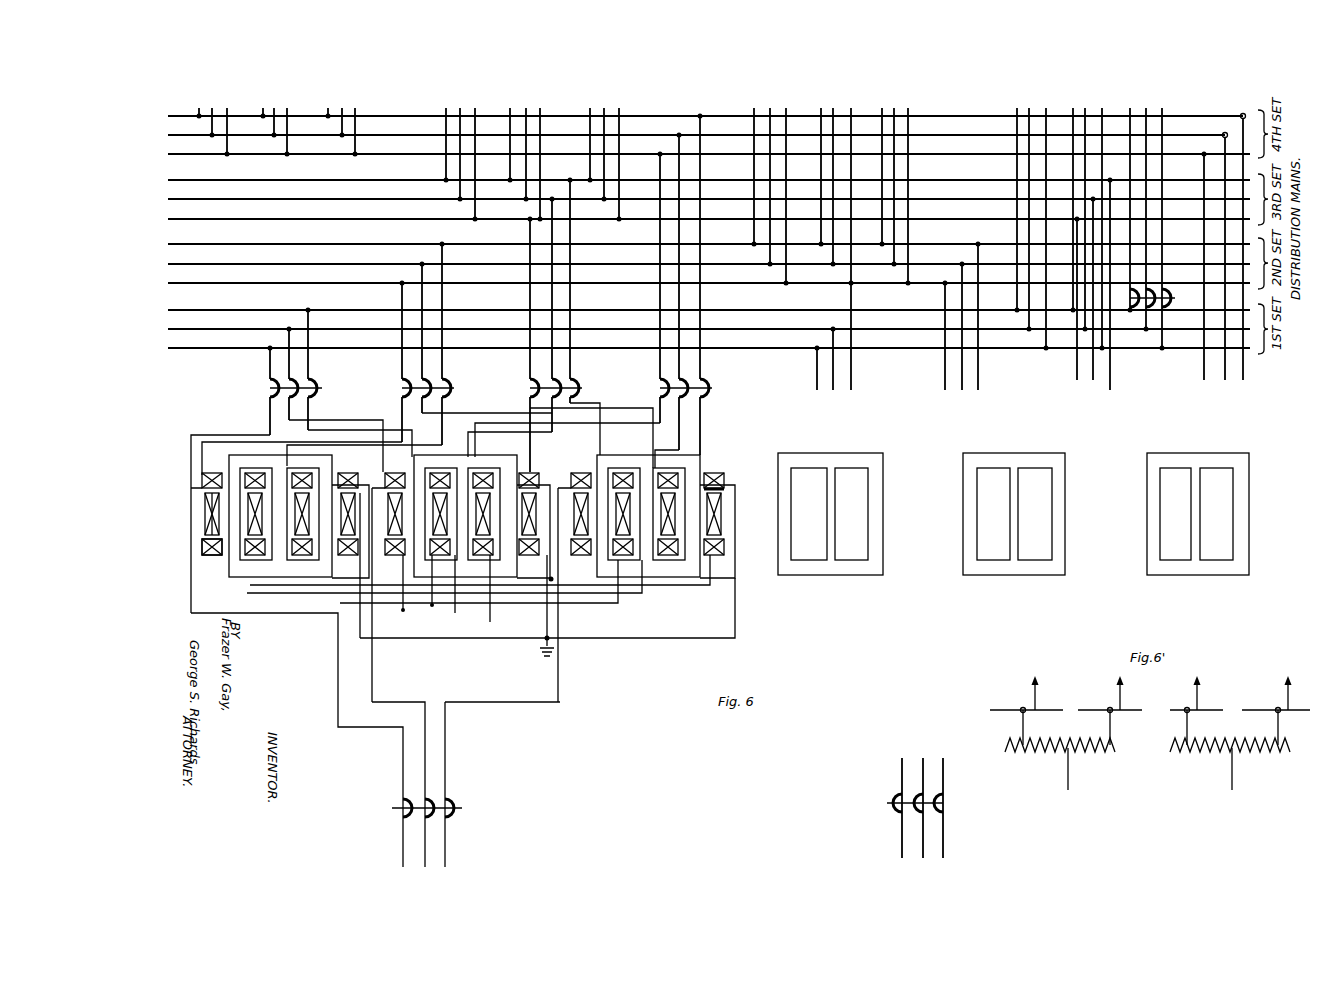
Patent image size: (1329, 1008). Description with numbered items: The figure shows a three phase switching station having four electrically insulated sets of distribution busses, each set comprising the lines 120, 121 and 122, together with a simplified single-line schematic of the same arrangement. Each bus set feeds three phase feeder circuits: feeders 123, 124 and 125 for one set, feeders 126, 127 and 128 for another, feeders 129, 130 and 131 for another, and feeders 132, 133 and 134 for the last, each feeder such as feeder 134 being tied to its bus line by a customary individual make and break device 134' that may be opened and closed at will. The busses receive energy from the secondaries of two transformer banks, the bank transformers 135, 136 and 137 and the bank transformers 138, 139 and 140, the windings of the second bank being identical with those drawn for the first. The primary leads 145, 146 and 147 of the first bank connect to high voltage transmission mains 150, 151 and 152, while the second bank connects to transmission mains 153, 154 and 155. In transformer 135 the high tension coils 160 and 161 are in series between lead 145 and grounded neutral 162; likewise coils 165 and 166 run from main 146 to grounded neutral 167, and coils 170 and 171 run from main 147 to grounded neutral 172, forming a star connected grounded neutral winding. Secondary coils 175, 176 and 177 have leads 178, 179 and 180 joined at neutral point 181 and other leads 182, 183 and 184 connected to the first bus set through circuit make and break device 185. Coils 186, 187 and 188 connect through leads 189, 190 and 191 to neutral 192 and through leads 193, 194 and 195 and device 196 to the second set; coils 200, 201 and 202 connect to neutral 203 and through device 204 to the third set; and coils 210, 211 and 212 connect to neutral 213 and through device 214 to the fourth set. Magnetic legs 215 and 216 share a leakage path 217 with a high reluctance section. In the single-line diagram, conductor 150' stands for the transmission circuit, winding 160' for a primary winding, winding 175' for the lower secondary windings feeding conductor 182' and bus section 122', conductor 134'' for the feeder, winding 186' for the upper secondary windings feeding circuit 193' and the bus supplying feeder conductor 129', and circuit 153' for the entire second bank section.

In FIG. 6, the distribution bus line 120 is at (706, 204).
In FIG. 6, the distribution bus line 121 is at (707, 224).
In FIG. 6, the distribution bus line 122 is at (707, 243).
In FIG. 6, the three phase feeder circuit 123 is at (229, 107).
In FIG. 6, the three phase feeder circuit 124 is at (289, 107).
In FIG. 6, the three phase feeder circuit 125 is at (357, 107).
In FIG. 6, the three phase feeder circuit 126 is at (477, 107).
In FIG. 6, the three phase feeder circuit 127 is at (542, 107).
In FIG. 6, the three phase feeder circuit 128 is at (621, 107).
In FIG. 6, the three phase feeder circuit 129 is at (770, 186).
In FIG. 6, the three phase feeder circuit 130 is at (853, 107).
In FIG. 6, the three phase feeder circuit 131 is at (910, 107).
In FIG. 6, the three phase feeder circuit 132 is at (1048, 107).
In FIG. 6, the three phase feeder circuit 133 is at (1104, 107).
In FIG. 6, the three phase feeder circuit 134 is at (1146, 219).
In FIG. 6, the individual make and break device 134' is at (1168, 298).
In FIG. 6, the bank transformer 135 is at (254, 460).
In FIG. 6, the bank transformer 136 is at (438, 456).
In FIG. 6, the bank transformer 137 is at (700, 456).
In FIG. 6, the bank transformer 138 is at (862, 445).
In FIG. 6, the bank transformer 139 is at (1058, 445).
In FIG. 6, the bank transformer 140 is at (1218, 453).
In FIG. 6, the three phase primary lead 145 is at (370, 730).
In FIG. 6, the three phase primary lead 146 is at (418, 690).
In FIG. 6, the three phase primary lead 147 is at (446, 727).
In FIG. 6, the high voltage transmission main 150 is at (406, 823).
In FIG. 6, the high voltage transmission main 151 is at (425, 855).
In FIG. 6, the high voltage transmission main 152 is at (446, 852).
In FIG. 6, the high voltage transmission main 153 is at (893, 808).
In FIG. 6, the high voltage transmission main 154 is at (923, 835).
In FIG. 6, the high voltage transmission main 155 is at (943, 851).
In FIG. 6, the high tension coil 160 is at (185, 514).
In FIG. 6, the high tension coil 161 is at (340, 500).
In FIG. 6, the grounded neutral 162 is at (547, 629).
In FIG. 6, the high tension coil 165 is at (400, 595).
In FIG. 6, the high tension coil 166 is at (488, 598).
In FIG. 6, the grounded neutral 167 is at (436, 640).
In FIG. 6, the high tension coil 170 is at (600, 558).
In FIG. 6, the high tension coil 171 is at (668, 555).
In FIG. 6, the grounded neutral 172 is at (735, 634).
In FIG. 6, the secondary coil 175 is at (190, 552).
In FIG. 6, the secondary coil 176 is at (392, 576).
In FIG. 6, the secondary coil 177 is at (578, 576).
In FIG. 6, the secondary lead 178 is at (260, 606).
In FIG. 6, the secondary lead 179 is at (432, 576).
In FIG. 6, the secondary lead 180 is at (609, 576).
In FIG. 6, the neutral point 181 is at (435, 595).
In FIG. 6, the secondary lead 182 is at (230, 505).
In FIG. 6, the secondary lead 183 is at (289, 424).
In FIG. 6, the secondary lead 184 is at (308, 420).
In FIG. 6, the circuit make and break device 185 is at (322, 387).
In FIG. 6, the secondary coil 186 is at (190, 514).
In FIG. 6, the secondary coil 187 is at (396, 502).
In FIG. 6, the secondary coil 188 is at (583, 502).
In FIG. 6, the secondary lead 189 is at (275, 590).
In FIG. 6, the secondary lead 190 is at (460, 577).
In FIG. 6, the secondary lead 191 is at (644, 577).
In FIG. 6, the neutral 192 is at (462, 594).
In FIG. 6, the secondary lead 193 is at (364, 439).
In FIG. 6, the secondary lead 194 is at (377, 444).
In FIG. 6, the secondary lead 195 is at (447, 408).
In FIG. 6, the circuit make and break device 196 is at (452, 387).
In FIG. 6, the secondary coil 200 is at (350, 565).
In FIG. 6, the secondary coil 201 is at (533, 579).
In FIG. 6, the secondary coil 202 is at (722, 581).
In FIG. 6, the neutral 203 is at (520, 555).
In FIG. 6, the circuit make and break device 204 is at (584, 383).
In FIG. 6, the secondary coil 210 is at (345, 472).
In FIG. 6, the secondary coil 211 is at (528, 472).
In FIG. 6, the secondary coil 212 is at (724, 472).
In FIG. 6, the neutral 213 is at (551, 579).
In FIG. 6, the circuit make and break device 214 is at (714, 383).
In FIG. 6, the magnetic leg 215 is at (236, 556).
In FIG. 6, the magnetic leg 216 is at (332, 572).
In FIG. 6, the leakage path 217 is at (1205, 594).
In FIG. 6', the bus section 122' is at (1073, 695).
In FIG. 6', the feeder conductor 129' is at (1145, 675).
In FIG. 6', the feeder conductor 134'' is at (1056, 685).
In FIG. 6', the transmission circuit conductor 150' is at (1087, 769).
In FIG. 6', the second bank circuit 153' is at (1230, 764).
In FIG. 6', the primary winding 160' is at (1060, 733).
In FIG. 6', the secondary winding 175' is at (1016, 764).
In FIG. 6', the secondary conductor 182' is at (998, 720).
In FIG. 6', the secondary winding 186' is at (1135, 762).
In FIG. 6', the secondary circuit conductor 193' is at (1132, 722).